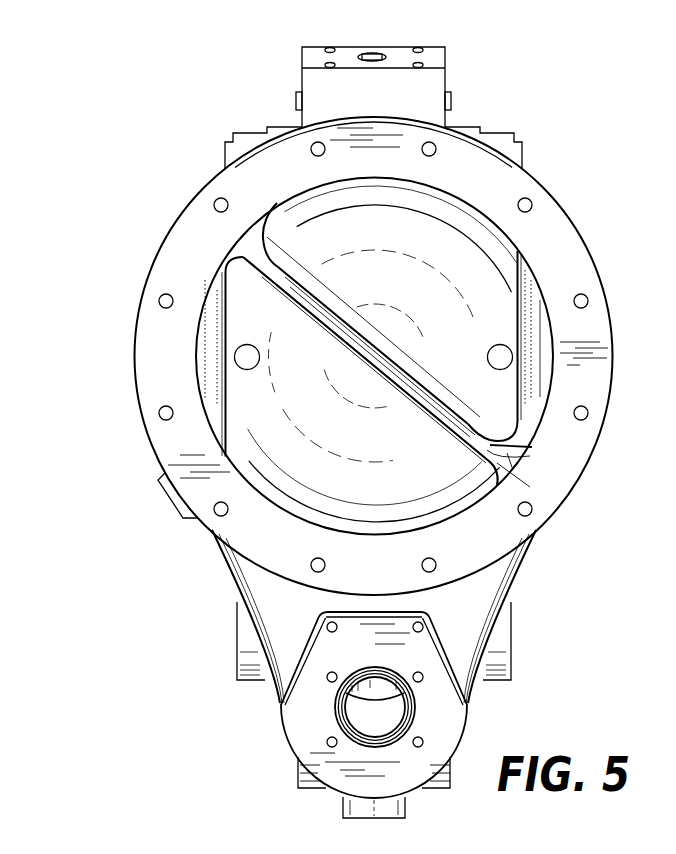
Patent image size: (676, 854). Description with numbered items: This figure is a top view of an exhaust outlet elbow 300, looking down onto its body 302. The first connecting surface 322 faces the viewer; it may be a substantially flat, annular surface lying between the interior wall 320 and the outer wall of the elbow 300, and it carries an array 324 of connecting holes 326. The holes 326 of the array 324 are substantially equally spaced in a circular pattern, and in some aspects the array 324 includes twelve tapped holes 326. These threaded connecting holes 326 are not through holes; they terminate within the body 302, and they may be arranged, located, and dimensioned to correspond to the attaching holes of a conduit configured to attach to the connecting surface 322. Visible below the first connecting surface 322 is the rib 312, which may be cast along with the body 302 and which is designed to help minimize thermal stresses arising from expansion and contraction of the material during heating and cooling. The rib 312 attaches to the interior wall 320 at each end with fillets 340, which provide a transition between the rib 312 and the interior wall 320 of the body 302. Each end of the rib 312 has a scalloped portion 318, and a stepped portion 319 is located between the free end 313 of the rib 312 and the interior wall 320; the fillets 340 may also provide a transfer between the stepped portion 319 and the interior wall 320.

The exhaust outlet elbow 300 is at (185, 236).
The body 302 is at (387, 147).
The rib 312 is at (440, 408).
The free end 313 is at (465, 428).
The scalloped portion 318 is at (500, 455).
The stepped portion 319 is at (488, 493).
The interior wall 320 is at (211, 298).
The first connecting surface 322 is at (260, 553).
The array 324 is at (146, 489).
The connecting holes 326 is at (527, 197).
The fillets 340 is at (260, 237).